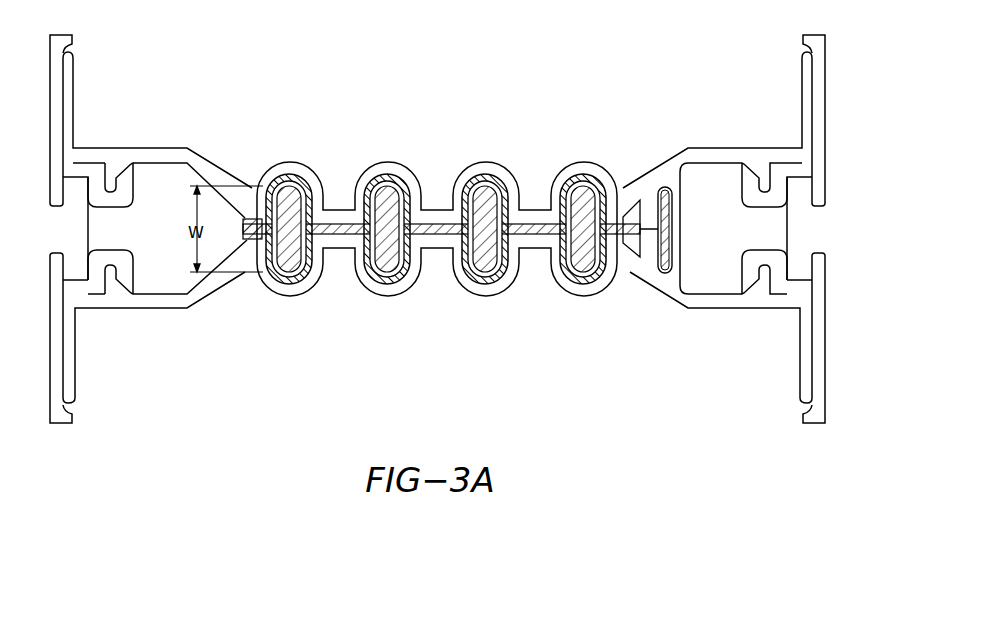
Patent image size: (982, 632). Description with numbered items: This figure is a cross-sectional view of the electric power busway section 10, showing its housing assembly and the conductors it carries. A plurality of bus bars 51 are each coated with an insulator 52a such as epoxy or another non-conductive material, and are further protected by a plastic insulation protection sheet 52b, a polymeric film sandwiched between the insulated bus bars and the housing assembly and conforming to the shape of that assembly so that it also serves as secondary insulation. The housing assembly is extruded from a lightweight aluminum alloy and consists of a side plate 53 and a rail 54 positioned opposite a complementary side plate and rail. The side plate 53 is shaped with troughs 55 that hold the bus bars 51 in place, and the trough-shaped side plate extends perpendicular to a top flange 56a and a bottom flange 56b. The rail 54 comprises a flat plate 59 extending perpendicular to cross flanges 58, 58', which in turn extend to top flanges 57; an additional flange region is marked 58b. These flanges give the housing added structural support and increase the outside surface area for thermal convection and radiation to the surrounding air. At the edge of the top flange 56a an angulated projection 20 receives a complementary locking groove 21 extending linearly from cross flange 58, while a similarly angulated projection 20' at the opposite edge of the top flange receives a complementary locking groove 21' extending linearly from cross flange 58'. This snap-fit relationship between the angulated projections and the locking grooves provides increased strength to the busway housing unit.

The electric power busway section 10 is at (457, 207).
The angulated projection 20 is at (110, 308).
The angulated projection 20' is at (113, 144).
The locking groove 21 is at (159, 296).
The locking groove 21' is at (158, 161).
The bus bar 51 is at (602, 272).
The insulator 52a is at (574, 278).
The plastic insulation protection sheet 52b is at (590, 283).
The side plate 53 is at (336, 212).
The rail 54 is at (820, 430).
The trough 55 is at (495, 168).
The top flange 56a is at (78, 380).
The bottom flange 56b is at (797, 380).
The top flange 57 is at (828, 100).
The cross flange 58 is at (71, 228).
The cross flange 58' is at (104, 208).
The screw channel 58b is at (805, 272).
The flat plate 59 is at (790, 228).